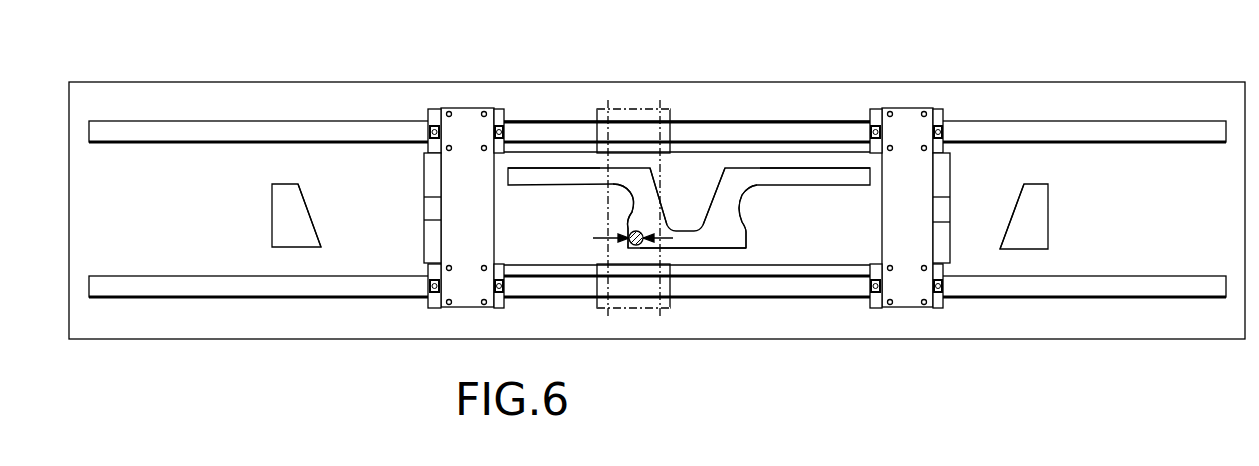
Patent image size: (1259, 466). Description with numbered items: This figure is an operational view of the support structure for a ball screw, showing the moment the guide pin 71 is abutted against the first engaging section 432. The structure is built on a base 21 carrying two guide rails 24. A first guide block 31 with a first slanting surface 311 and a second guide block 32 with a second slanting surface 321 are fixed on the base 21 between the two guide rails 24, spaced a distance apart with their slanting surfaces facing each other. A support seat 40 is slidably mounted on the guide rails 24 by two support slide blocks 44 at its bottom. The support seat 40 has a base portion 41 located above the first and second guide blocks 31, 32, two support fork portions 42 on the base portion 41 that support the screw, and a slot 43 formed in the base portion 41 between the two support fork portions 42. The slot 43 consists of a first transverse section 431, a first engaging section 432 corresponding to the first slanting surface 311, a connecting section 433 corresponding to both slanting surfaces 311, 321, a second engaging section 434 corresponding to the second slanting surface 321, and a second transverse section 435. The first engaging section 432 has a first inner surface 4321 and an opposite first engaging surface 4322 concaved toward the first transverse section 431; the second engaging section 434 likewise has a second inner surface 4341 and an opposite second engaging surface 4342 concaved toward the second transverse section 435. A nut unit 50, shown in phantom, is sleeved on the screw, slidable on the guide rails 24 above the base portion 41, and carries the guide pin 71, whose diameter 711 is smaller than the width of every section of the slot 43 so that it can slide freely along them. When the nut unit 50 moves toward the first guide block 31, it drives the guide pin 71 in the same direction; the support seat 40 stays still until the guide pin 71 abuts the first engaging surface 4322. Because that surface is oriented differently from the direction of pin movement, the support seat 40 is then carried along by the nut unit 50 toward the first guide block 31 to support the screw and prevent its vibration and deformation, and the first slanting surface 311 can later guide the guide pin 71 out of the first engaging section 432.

The base 21 is at (110, 330).
The guide rails 24 is at (218, 128).
The first guide block 31 is at (265, 145).
The first slanting surface 311 is at (303, 198).
The second guide block 32 is at (1039, 203).
The second slanting surface 321 is at (1008, 215).
The support seat 40 is at (756, 152).
The base portion 41 is at (887, 205).
The support fork portions 42 is at (432, 170).
The slot 43 is at (674, 219).
The first transverse section 431 is at (525, 173).
The first engaging section 432 is at (642, 213).
The first inner surface 4321 is at (650, 168).
The first engaging surface 4322 is at (627, 232).
The connecting section 433 is at (690, 240).
The second engaging section 434 is at (728, 213).
The second inner surface 4341 is at (712, 190).
The second engaging surface 4342 is at (735, 248).
The second transverse section 435 is at (797, 175).
The support slide blocks 44 is at (434, 109).
The nut unit 50 is at (620, 108).
The guide pin 71 is at (629, 250).
The diameter 711 is at (595, 238).